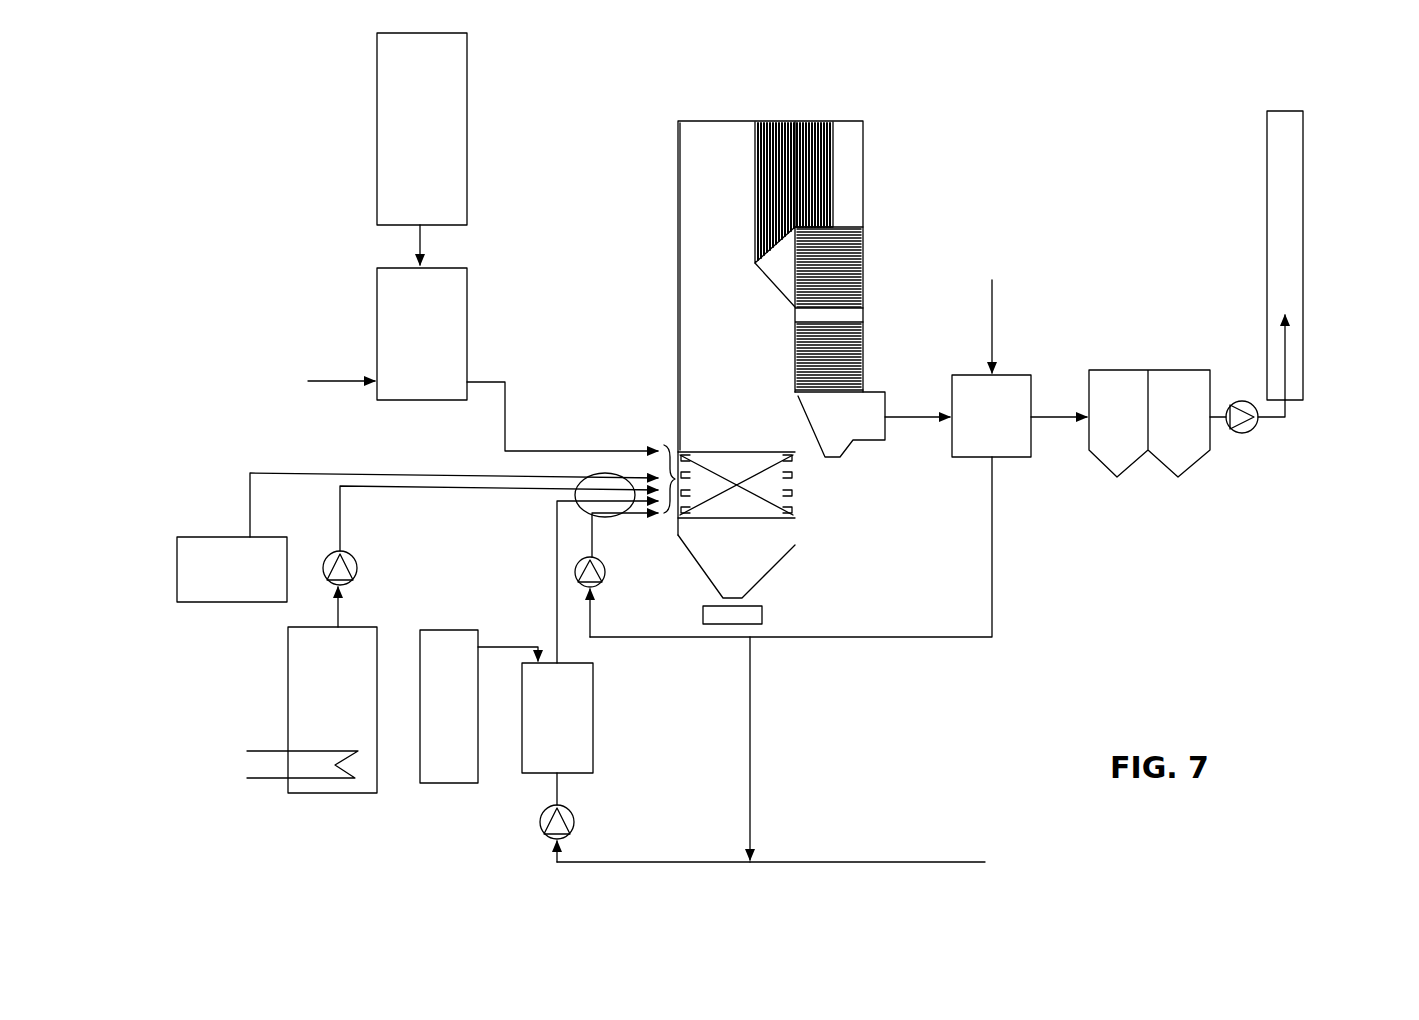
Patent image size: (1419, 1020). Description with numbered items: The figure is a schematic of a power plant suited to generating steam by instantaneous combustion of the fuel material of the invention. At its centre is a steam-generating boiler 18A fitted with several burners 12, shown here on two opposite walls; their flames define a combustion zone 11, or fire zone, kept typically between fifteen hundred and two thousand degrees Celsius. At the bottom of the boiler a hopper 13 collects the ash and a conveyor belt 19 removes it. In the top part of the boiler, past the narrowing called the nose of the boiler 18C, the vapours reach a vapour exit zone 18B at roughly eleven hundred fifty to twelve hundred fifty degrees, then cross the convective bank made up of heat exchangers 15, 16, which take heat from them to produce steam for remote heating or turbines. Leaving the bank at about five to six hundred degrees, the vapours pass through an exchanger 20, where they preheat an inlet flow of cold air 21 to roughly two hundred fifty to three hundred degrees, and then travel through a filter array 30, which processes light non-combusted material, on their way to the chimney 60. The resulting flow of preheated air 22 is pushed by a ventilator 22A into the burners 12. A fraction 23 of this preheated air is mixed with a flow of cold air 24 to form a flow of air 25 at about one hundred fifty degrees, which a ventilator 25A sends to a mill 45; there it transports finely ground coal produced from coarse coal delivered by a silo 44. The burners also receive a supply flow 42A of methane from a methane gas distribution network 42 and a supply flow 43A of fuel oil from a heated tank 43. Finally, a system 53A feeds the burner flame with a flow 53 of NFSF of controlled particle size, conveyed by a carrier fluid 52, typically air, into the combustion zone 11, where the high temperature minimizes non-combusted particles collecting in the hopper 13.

The combustion zone 11 is at (742, 510).
The burners 12 is at (682, 455).
The hopper 13 is at (755, 558).
The heat exchanger 15 is at (780, 113).
The heat exchangers 16 is at (828, 143).
The steam-generating boiler 18A is at (650, 165).
The vapour exit zone 18B is at (706, 140).
The nose of the boiler 18C is at (765, 283).
The conveyor belt 19 is at (762, 618).
The exchanger 20 is at (1008, 438).
The inlet flow of cold air 21 is at (996, 318).
The flow of preheated air 22 is at (993, 578).
The ventilator 22A is at (604, 570).
The fraction of the flow of preheated air 23 is at (755, 722).
The flow of cold air 24 is at (906, 862).
The flow of air 25 is at (632, 862).
The ventilator 25A is at (545, 838).
The filter array 30 is at (1117, 390).
The methane gas distribution network 42 is at (196, 548).
The supply flow of methane 42A is at (405, 473).
The heated tank of fuel oil 43 is at (300, 675).
The supply flow of fuel oil 43A is at (428, 490).
The silo 44 is at (458, 656).
The mill 45 is at (580, 732).
The carrier fluid 52 is at (318, 378).
The flow of NFSF 53 is at (540, 444).
The system for feeding NFSF 53A is at (295, 308).
The chimney 60 is at (1285, 232).